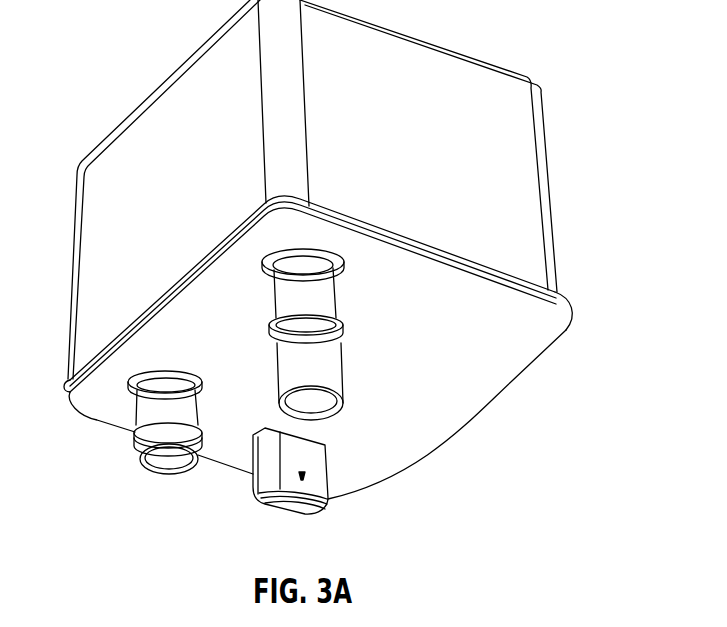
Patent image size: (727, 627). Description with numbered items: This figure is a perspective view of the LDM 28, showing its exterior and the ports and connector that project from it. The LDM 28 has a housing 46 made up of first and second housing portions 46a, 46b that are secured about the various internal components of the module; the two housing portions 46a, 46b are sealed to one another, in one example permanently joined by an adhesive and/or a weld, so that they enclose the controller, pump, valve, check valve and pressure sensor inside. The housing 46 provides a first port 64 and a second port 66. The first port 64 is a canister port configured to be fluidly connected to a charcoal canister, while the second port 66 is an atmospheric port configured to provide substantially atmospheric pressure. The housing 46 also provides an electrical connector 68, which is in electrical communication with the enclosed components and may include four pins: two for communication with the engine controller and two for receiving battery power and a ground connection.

The LDM 28 is at (345, 281).
The housing 46 is at (343, 249).
The first housing portion 46a is at (556, 324).
The second housing portion 46b is at (537, 240).
The first port 64 is at (325, 400).
The second port 66 is at (171, 461).
The electrical connector 68 is at (292, 492).